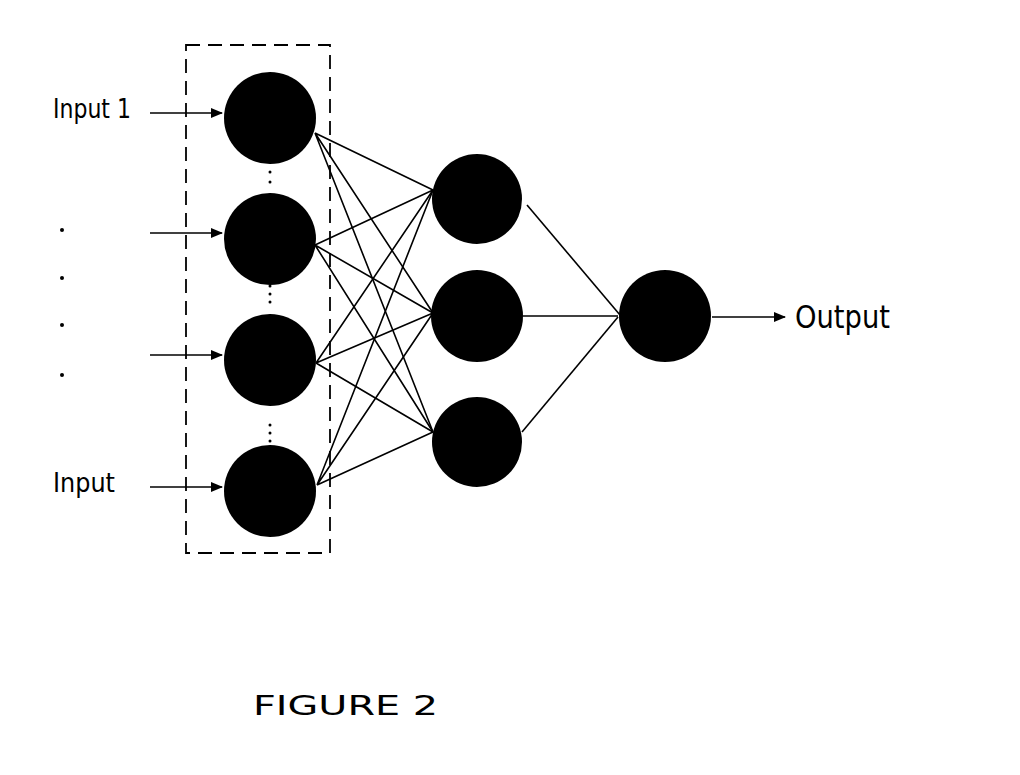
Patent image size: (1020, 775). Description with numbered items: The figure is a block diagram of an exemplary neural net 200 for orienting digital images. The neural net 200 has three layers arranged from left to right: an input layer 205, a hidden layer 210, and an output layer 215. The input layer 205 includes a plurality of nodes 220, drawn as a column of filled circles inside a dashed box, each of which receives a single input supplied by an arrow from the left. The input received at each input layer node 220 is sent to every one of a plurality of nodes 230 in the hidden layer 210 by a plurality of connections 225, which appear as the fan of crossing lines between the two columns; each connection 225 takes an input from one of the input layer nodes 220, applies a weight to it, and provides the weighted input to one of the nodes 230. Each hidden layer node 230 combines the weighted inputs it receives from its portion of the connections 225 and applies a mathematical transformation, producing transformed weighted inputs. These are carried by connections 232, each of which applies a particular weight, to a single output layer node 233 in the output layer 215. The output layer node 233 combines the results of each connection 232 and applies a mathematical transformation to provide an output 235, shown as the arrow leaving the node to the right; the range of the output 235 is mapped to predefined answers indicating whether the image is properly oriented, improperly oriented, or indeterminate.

The neural net 200 is at (730, 80).
The input layer 205 is at (288, 341).
The hidden layer 210 is at (477, 381).
The output layer 215 is at (668, 438).
The node 220 is at (310, 95).
The connection 225 is at (352, 126).
The node 230 is at (488, 152).
The connection 232 is at (600, 270).
The output layer node 233 is at (690, 273).
The output 235 is at (745, 320).